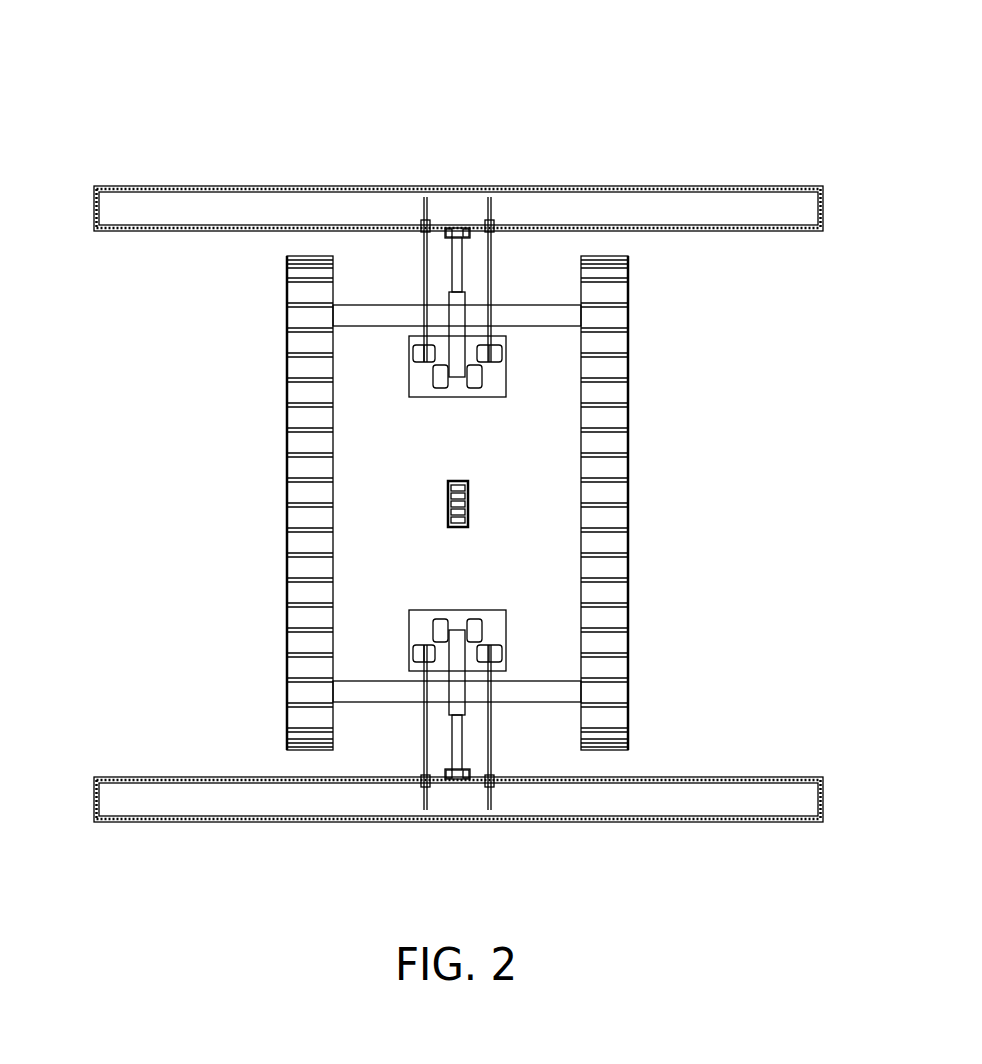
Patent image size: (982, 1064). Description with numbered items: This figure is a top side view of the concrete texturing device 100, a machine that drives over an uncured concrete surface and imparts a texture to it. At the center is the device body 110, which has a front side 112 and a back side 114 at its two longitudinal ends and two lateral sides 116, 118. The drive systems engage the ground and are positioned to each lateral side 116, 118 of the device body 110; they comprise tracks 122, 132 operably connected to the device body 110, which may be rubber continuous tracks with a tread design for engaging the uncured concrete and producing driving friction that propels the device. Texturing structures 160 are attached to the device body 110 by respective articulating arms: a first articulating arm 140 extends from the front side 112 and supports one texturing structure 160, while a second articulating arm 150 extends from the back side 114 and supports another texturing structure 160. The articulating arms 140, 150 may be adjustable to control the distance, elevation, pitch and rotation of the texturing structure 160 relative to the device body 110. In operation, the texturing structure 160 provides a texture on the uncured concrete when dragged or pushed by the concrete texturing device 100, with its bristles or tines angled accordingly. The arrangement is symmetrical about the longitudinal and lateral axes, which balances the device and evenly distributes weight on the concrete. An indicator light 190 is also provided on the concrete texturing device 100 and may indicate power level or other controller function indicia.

The concrete texturing device 100 is at (123, 58).
The device body 110 is at (356, 646).
The front side 112 is at (380, 712).
The back side 114 is at (383, 296).
The lateral side 116 is at (645, 503).
The lateral side 118 is at (271, 503).
The track 122 is at (305, 391).
The track 132 is at (610, 342).
The first articulating arm 140 is at (492, 745).
The second articulating arm 150 is at (492, 283).
The texturing structure 160 is at (708, 208).
The indicator light 190 is at (464, 503).